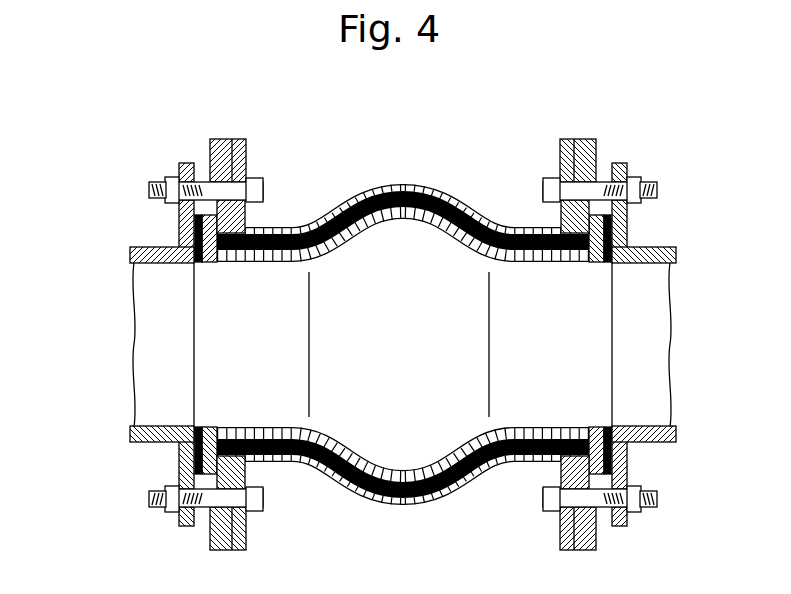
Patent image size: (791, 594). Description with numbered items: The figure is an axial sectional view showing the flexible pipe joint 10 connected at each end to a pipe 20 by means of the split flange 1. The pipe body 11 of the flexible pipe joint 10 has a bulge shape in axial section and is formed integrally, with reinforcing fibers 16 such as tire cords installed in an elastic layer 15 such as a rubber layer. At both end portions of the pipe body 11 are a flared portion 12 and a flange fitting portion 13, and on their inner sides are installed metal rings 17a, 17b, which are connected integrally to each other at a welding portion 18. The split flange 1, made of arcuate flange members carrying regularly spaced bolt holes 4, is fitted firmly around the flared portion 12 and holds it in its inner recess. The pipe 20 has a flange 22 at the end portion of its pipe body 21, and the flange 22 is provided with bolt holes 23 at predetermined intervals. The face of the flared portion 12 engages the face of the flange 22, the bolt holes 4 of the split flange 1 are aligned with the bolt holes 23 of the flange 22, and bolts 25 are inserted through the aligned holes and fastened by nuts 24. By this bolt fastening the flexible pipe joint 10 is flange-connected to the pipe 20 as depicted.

The split flange 1 is at (392, 323).
The bolt holes 4 is at (263, 200).
The flexible pipe joint 10 is at (392, 323).
The pipe body 11 is at (366, 186).
The flared portion 12 is at (197, 237).
The flange fitting portion 13 is at (284, 223).
The elastic layer 15 is at (484, 200).
The reinforcing fibers 16 is at (436, 185).
The metal ring 17a is at (205, 263).
The metal ring 17b is at (283, 263).
The welding portion 18 is at (252, 263).
The pipe 20 is at (133, 350).
The pipe body 21 is at (130, 252).
The flange 22 is at (180, 215).
The bolt holes 23 is at (176, 164).
The nuts 24 is at (165, 173).
The bolts 25 is at (207, 165).